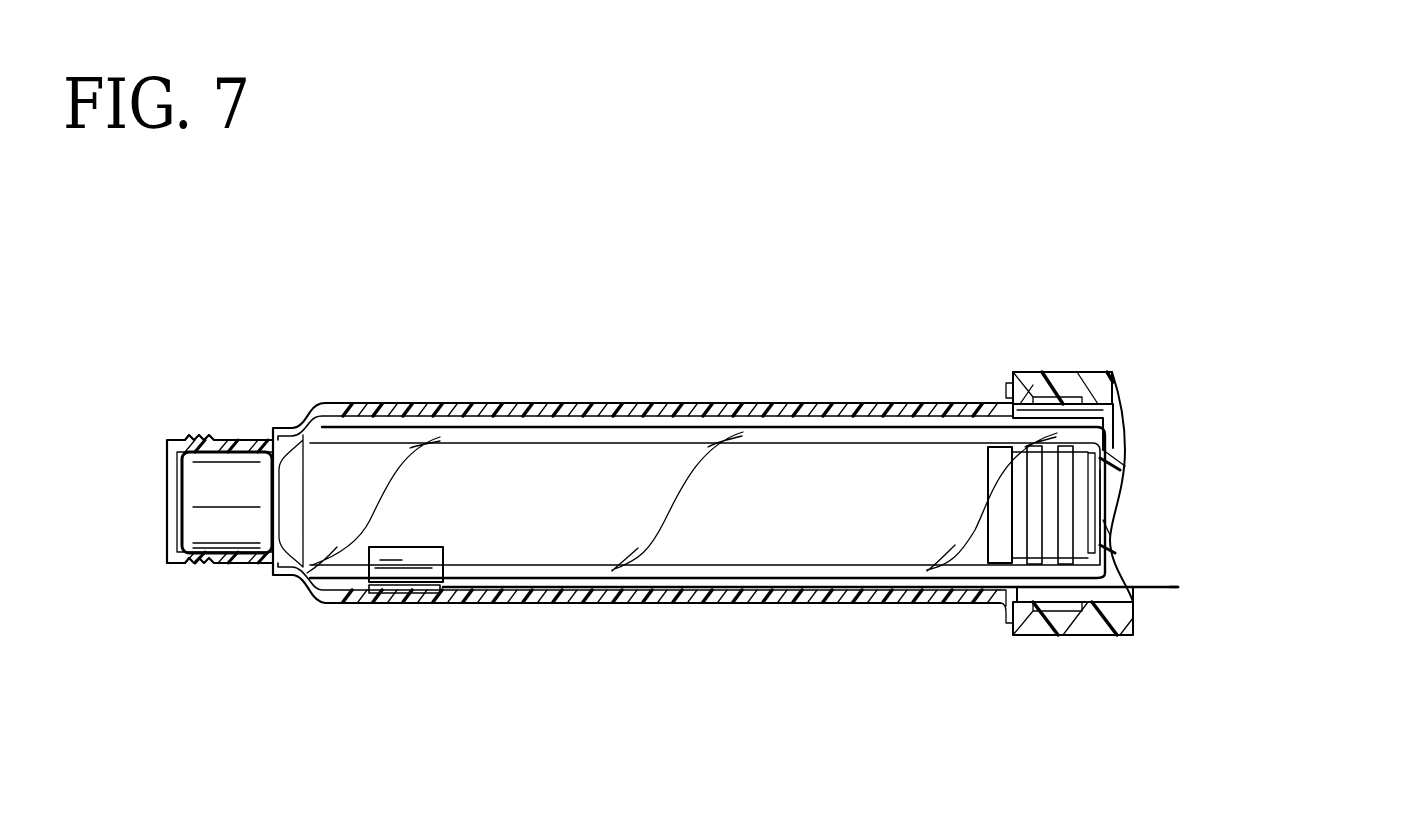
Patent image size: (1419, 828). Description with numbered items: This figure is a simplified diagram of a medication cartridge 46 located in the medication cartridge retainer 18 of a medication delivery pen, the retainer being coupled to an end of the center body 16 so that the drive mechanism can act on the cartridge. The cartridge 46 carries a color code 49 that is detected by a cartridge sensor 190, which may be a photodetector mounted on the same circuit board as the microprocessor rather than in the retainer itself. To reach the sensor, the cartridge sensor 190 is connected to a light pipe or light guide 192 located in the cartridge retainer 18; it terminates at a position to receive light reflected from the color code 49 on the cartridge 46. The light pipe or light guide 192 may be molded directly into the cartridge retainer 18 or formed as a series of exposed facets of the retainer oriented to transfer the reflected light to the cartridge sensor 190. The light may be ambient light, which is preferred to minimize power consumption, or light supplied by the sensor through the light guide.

The center body 16 is at (1088, 372).
The medication cartridge retainer 18 is at (782, 403).
The cartridge 46 is at (455, 440).
The color code 49 is at (388, 567).
The cartridge sensor 190 is at (1278, 588).
The light pipe or light guide 192 is at (1163, 588).